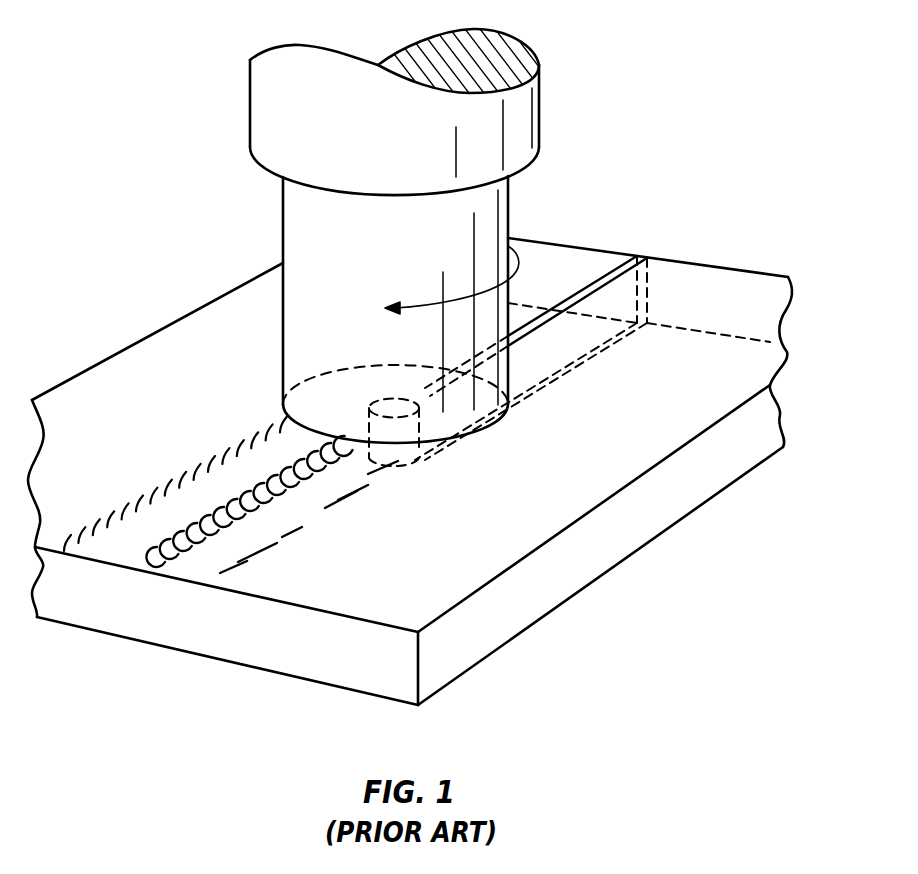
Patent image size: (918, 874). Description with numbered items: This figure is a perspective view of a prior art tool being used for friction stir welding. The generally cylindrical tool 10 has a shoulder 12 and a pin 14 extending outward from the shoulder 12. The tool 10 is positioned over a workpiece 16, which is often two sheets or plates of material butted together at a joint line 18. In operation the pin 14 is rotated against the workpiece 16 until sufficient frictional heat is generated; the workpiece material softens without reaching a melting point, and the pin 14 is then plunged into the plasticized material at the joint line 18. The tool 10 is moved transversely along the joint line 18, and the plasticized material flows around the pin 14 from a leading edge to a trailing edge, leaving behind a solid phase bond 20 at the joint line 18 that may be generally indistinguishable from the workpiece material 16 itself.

The tool 10 is at (508, 220).
The shoulder 12 is at (483, 403).
The pin 14 is at (413, 433).
The workpiece 16 is at (715, 290).
The joint line 18 is at (638, 258).
The solid phase bond 20 is at (289, 433).